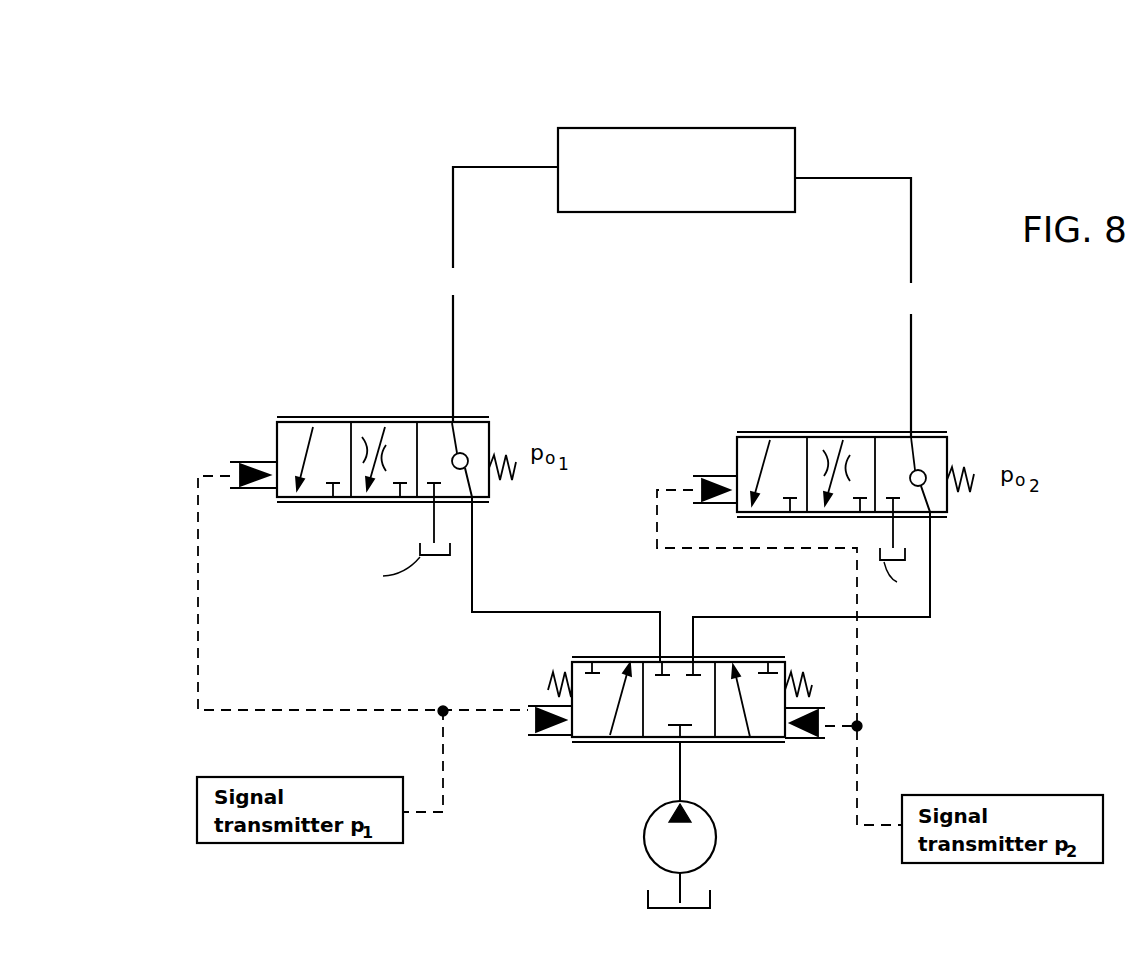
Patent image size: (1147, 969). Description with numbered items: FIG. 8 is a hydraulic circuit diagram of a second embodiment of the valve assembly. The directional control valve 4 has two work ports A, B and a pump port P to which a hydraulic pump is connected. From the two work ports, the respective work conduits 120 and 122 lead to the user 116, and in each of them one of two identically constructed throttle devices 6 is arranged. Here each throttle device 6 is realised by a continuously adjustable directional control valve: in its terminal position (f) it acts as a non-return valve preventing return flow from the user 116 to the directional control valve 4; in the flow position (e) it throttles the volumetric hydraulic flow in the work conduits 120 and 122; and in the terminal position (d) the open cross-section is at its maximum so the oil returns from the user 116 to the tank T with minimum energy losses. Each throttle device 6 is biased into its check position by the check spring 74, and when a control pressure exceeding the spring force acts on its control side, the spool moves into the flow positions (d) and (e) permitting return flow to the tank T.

The user 116 is at (703, 128).
The work conduit 120 is at (450, 341).
The work conduit 122 is at (912, 213).
The throttle device 6 is at (468, 414).
The check spring 74 is at (505, 482).
The directional control valve 4 is at (638, 761).